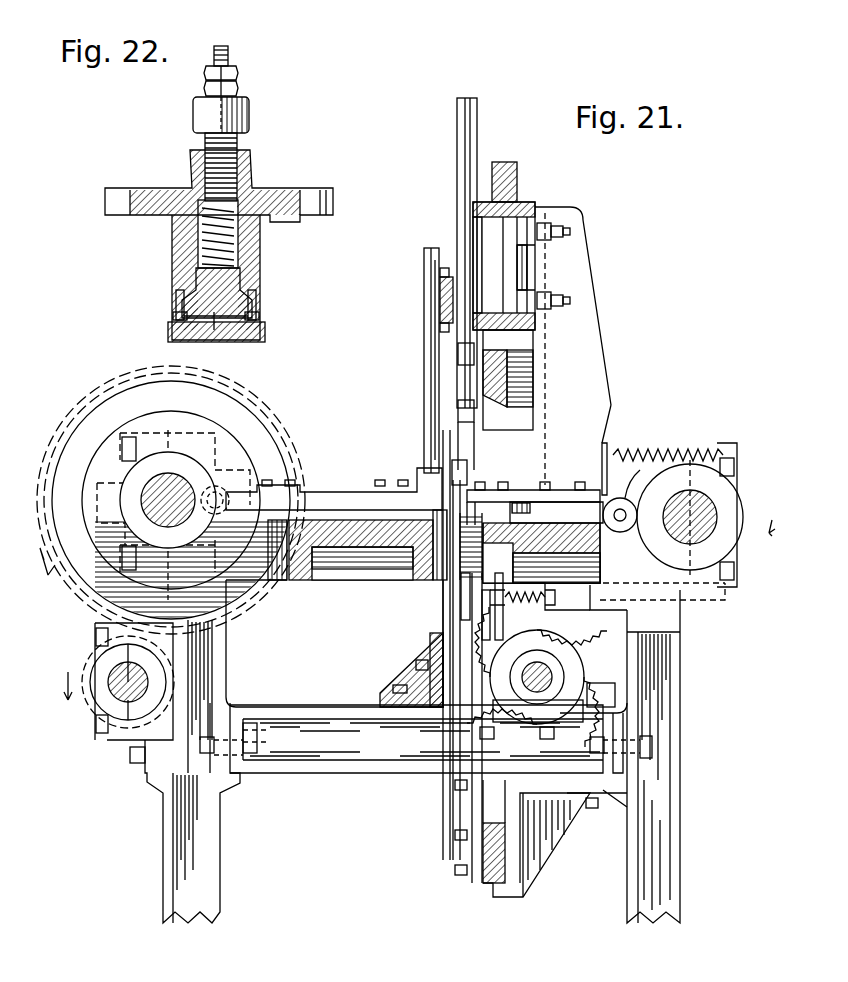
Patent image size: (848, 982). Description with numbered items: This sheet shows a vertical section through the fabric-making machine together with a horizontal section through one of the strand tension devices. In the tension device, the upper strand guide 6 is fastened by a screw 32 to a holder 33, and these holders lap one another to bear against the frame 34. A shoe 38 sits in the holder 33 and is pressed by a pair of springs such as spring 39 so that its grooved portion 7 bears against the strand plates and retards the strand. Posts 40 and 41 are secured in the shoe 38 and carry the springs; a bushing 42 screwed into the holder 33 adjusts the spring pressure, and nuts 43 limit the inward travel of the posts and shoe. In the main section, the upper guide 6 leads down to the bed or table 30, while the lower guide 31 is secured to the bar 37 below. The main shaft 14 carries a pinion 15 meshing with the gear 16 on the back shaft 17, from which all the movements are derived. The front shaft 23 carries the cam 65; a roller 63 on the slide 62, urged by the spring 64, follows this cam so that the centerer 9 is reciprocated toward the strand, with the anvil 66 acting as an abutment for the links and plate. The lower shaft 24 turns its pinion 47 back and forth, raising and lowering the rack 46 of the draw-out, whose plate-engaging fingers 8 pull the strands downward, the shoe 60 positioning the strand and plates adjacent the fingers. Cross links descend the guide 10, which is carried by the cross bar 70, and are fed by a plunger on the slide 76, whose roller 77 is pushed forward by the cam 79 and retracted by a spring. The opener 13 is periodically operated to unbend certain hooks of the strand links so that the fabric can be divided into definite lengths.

In FIG. 22, the strand guide 6 is at (265, 334).
In FIG. 21, the strand guide 6 is at (457, 140).
In FIG. 22, the grooved portion 7 is at (256, 268).
In FIG. 21, the plate-engaging fingers 8 is at (461, 592).
In FIG. 21, the centerer 9 is at (490, 490).
In FIG. 21, the cross link guide 10 is at (424, 382).
In FIG. 21, the opener 13 is at (500, 375).
In FIG. 21, the main shaft 14 is at (118, 690).
In FIG. 21, the pinion 15 is at (90, 660).
In FIG. 21, the gear 16 is at (88, 405).
In FIG. 21, the back shaft 17 is at (175, 497).
In FIG. 21, the front shaft 23 is at (712, 508).
In FIG. 21, the lower shaft 24 is at (552, 677).
In FIG. 21, the bed or table 30 is at (365, 545).
In FIG. 21, the lower guide 31 is at (443, 830).
In FIG. 22, the screw 32 is at (176, 312).
In FIG. 22, the holder 33 is at (300, 200).
In FIG. 21, the holder 33 is at (482, 235).
In FIG. 21, the frame 34 is at (517, 176).
In FIG. 21, the bar 37 is at (400, 690).
In FIG. 22, the shoe 38 is at (196, 270).
In FIG. 22, the spring 39 is at (238, 242).
In FIG. 22, the post 40 is at (228, 52).
In FIG. 21, the post 40 is at (570, 231).
In FIG. 21, the post 41 is at (570, 300).
In FIG. 22, the bushing 42 is at (237, 146).
In FIG. 22, the nut 43 is at (236, 72).
In FIG. 21, the rack 46 is at (505, 718).
In FIG. 21, the pinion 47 is at (545, 655).
In FIG. 21, the shoe 60 is at (482, 600).
In FIG. 21, the slide 62 is at (560, 520).
In FIG. 21, the roller 63 is at (622, 451).
In FIG. 21, the spring 64 is at (668, 449).
In FIG. 21, the cam 65 is at (700, 475).
In FIG. 21, the anvil 66 is at (467, 470).
In FIG. 21, the cross bar 70 is at (440, 292).
In FIG. 21, the slide 76 is at (355, 508).
In FIG. 21, the roller 77 is at (218, 492).
In FIG. 21, the cam 79 is at (105, 470).